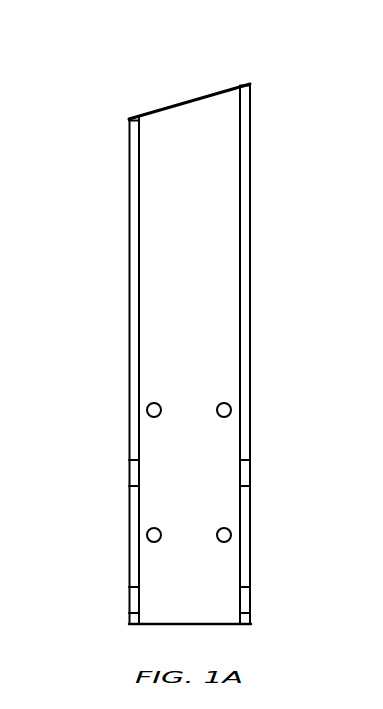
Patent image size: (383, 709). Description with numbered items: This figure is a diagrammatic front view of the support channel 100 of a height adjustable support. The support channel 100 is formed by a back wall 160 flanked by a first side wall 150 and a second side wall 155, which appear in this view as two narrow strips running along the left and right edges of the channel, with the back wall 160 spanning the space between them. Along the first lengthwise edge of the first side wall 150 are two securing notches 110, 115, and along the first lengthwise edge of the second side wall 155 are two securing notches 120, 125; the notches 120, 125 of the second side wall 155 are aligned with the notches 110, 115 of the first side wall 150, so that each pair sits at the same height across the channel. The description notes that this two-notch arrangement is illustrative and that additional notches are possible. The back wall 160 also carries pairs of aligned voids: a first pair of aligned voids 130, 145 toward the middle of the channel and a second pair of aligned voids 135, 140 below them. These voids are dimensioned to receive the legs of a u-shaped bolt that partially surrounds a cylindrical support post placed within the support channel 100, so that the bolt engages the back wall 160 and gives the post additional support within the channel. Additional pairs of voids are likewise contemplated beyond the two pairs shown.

The support channel 100 is at (188, 346).
The securing notch 110 is at (251, 468).
The securing notch 115 is at (251, 596).
The securing notch 120 is at (128, 468).
The securing notch 125 is at (128, 596).
The aligned void 130 is at (148, 404).
The aligned void 135 is at (148, 530).
The aligned void 140 is at (230, 530).
The aligned void 145 is at (230, 404).
The first side wall 150 is at (251, 138).
The second side wall 155 is at (128, 187).
The back wall 160 is at (175, 155).